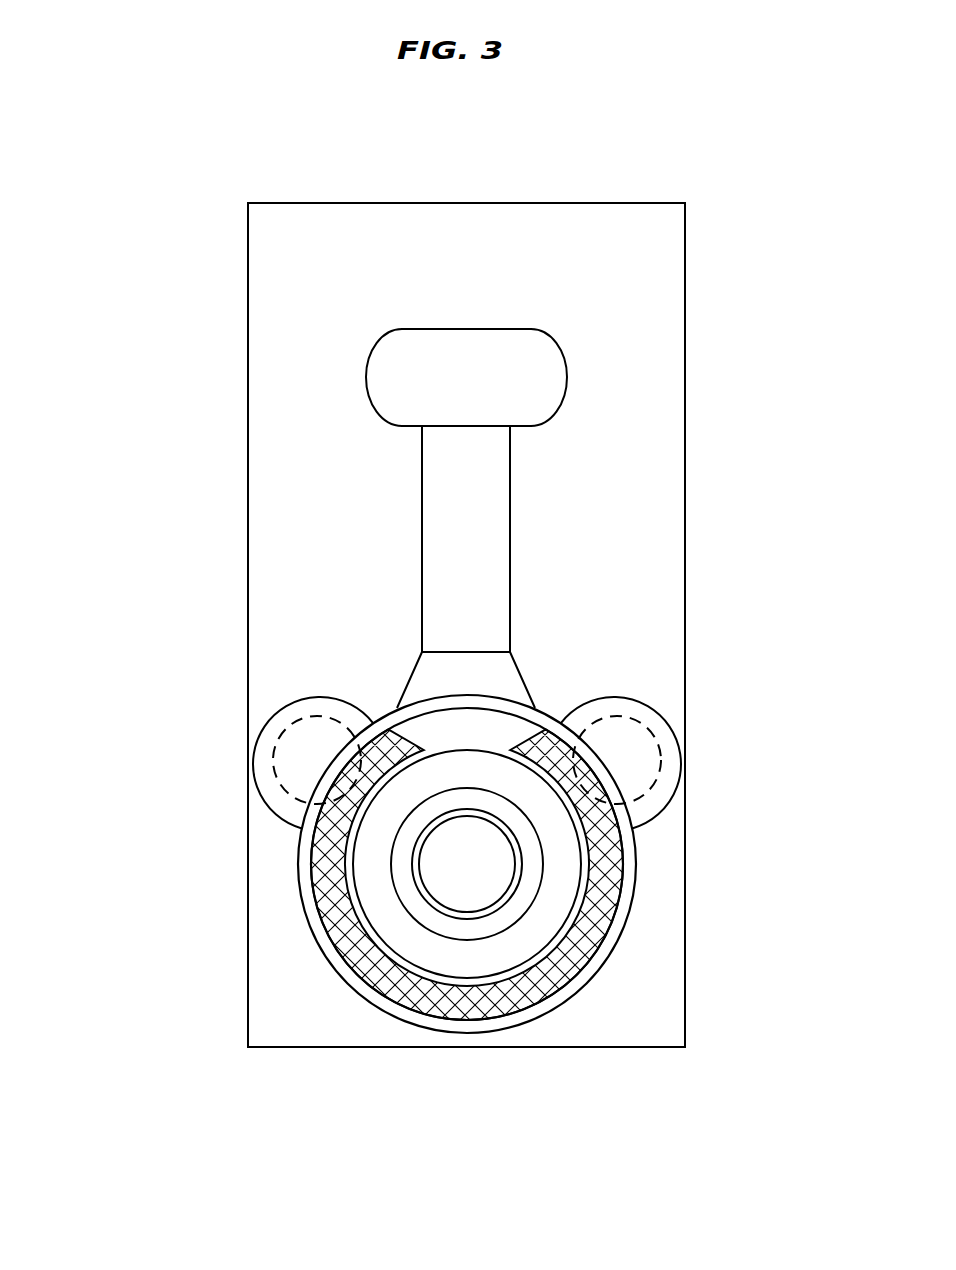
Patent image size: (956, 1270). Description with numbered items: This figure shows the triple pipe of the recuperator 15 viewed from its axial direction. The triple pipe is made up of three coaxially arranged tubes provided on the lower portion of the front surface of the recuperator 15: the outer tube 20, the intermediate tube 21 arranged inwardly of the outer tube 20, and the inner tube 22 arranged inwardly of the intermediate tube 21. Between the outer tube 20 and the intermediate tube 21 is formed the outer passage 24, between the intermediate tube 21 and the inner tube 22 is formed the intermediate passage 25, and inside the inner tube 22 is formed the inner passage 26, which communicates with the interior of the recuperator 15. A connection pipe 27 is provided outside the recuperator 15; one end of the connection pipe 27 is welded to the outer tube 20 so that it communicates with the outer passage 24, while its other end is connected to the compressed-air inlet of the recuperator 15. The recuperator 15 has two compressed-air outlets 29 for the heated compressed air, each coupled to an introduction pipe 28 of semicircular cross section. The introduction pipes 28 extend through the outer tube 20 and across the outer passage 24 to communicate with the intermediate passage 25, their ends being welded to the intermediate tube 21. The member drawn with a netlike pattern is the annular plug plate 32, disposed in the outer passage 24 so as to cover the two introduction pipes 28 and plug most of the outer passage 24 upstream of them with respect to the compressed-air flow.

The recuperator 15 is at (247, 523).
The outer tube 20 is at (322, 953).
The intermediate tube 21 is at (318, 918).
The inner tube 22 is at (408, 869).
The outer passage 24 is at (410, 990).
The intermediate passage 25 is at (472, 960).
The inner passage 26 is at (477, 882).
The connection pipe 27 is at (510, 505).
The introduction pipe 28 is at (280, 705).
The compressed-air outlet 29 is at (283, 736).
The plug plate 32 is at (614, 911).